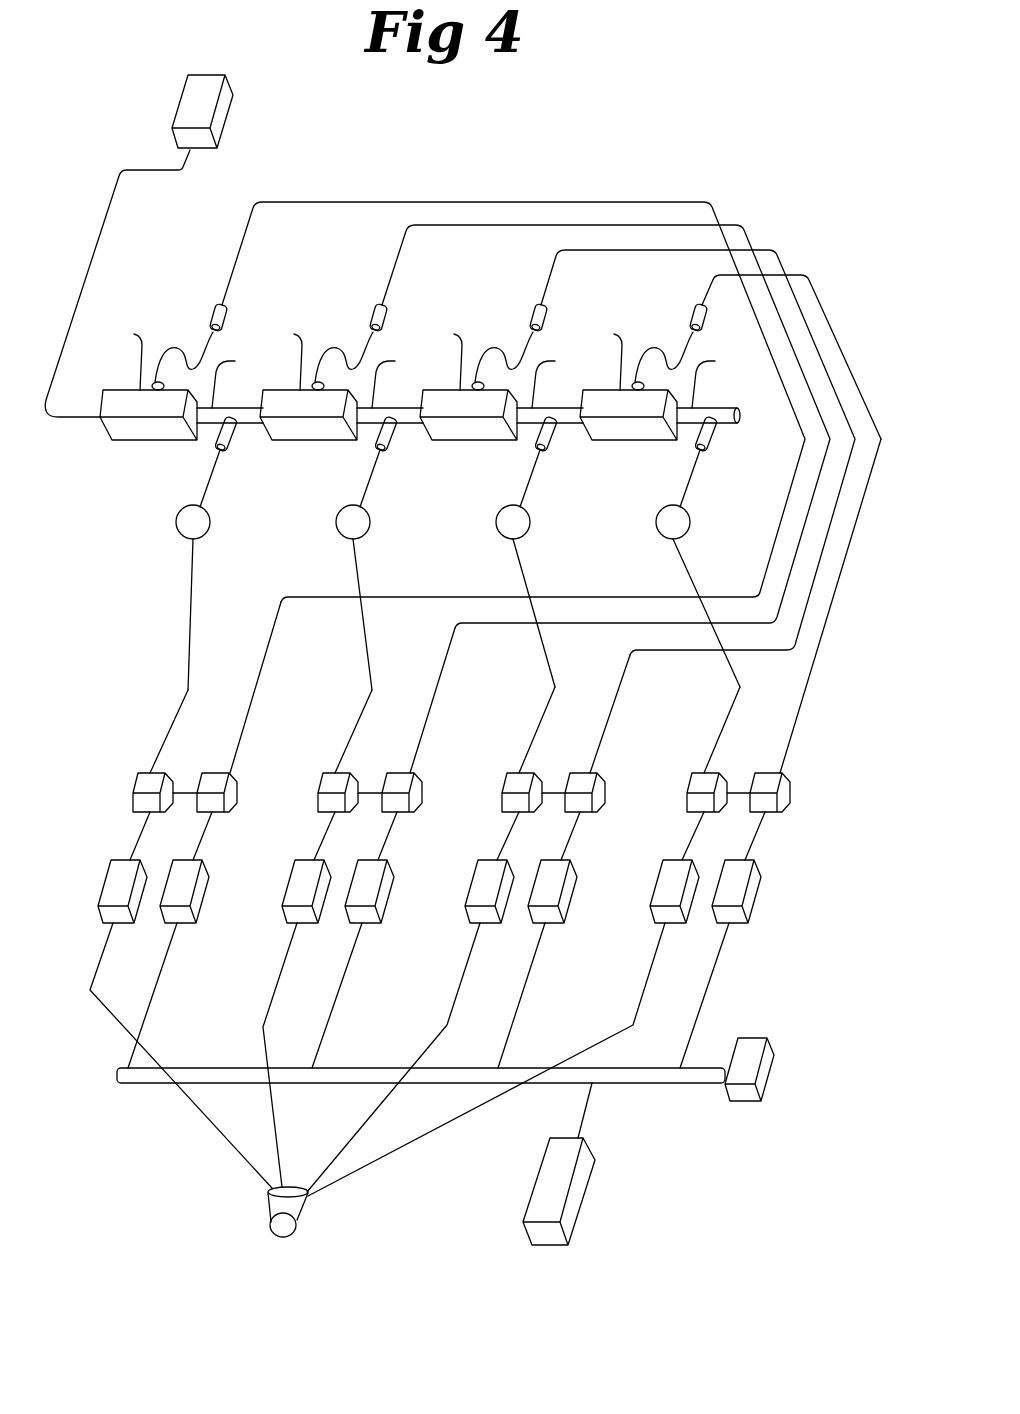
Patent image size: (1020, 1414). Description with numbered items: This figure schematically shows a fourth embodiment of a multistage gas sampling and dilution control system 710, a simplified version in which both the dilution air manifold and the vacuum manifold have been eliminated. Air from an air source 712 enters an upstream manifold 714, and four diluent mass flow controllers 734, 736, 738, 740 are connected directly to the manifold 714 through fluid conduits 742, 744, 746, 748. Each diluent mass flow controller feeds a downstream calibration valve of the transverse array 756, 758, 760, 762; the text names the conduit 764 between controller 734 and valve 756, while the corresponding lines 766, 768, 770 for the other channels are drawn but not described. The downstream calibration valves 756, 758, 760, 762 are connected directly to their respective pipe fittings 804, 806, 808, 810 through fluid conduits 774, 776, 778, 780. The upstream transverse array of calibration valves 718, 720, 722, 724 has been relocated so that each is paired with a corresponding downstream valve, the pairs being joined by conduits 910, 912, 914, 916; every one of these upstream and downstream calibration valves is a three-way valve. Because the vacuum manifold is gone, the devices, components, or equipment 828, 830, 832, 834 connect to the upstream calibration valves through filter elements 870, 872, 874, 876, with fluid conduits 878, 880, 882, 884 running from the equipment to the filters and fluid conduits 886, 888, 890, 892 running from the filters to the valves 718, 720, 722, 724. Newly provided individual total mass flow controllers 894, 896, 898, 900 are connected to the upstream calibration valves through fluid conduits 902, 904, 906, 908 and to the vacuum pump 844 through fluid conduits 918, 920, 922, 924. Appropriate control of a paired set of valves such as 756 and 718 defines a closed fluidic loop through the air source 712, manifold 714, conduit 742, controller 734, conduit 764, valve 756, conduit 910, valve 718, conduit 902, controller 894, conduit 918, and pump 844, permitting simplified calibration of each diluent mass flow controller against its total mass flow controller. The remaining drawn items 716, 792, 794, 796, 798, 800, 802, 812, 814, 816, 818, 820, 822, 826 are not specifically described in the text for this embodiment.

The multistage gas sampling and dilution control system 710 is at (742, 168).
The air source 712 is at (572, 1213).
The upstream manifold 714 is at (135, 1080).
The connector wire 716 is at (590, 1112).
The upstream calibration valve 718 is at (147, 784).
The upstream calibration valve 720 is at (332, 784).
The upstream calibration valve 722 is at (517, 784).
The upstream calibration valve 724 is at (702, 784).
The diluent mass flow controller 734 is at (204, 885).
The diluent mass flow controller 736 is at (388, 885).
The diluent mass flow controller 738 is at (572, 885).
The diluent mass flow controller 740 is at (757, 885).
The fluid conduit 742 is at (162, 973).
The fluid conduit 744 is at (347, 973).
The fluid conduit 746 is at (530, 973).
The fluid conduit 748 is at (710, 973).
The downstream calibration valve 756 is at (239, 805).
The downstream calibration valve 758 is at (423, 805).
The downstream calibration valve 760 is at (608, 805).
The downstream calibration valve 762 is at (790, 803).
The conduit 764 is at (209, 830).
The wire 766 is at (392, 830).
The wire 768 is at (577, 830).
The wire 770 is at (762, 832).
The fluid conduit 774 is at (232, 758).
The fluid conduit 776 is at (414, 758).
The fluid conduit 778 is at (600, 758).
The fluid conduit 780 is at (788, 758).
The controller 792 is at (222, 118).
The sensor housing 794 is at (145, 432).
The sensor housing 796 is at (305, 432).
The sensor housing 798 is at (465, 432).
The sensor housing 800 is at (625, 432).
The cable 802 is at (102, 223).
The pipe fitting 804 is at (207, 310).
The pipe fitting 806 is at (367, 310).
The pipe fitting 808 is at (528, 310).
The pipe fitting 810 is at (688, 310).
The lead 812 is at (113, 353).
The lead 814 is at (273, 353).
The lead 816 is at (433, 353).
The lead 818 is at (593, 353).
The wire 820 is at (176, 340).
The wire 822 is at (336, 340).
The wire 826 is at (656, 340).
The device, component, or equipment 828 is at (496, 347).
The device, component, or equipment 830 is at (365, 456).
The device, component, or equipment 832 is at (525, 456).
The device, component, or equipment 834 is at (685, 456).
The vacuum pump 844 is at (281, 1230).
The filter element 870 is at (189, 542).
The filter element 872 is at (350, 542).
The filter element 874 is at (512, 542).
The filter element 876 is at (675, 542).
The fluid conduit 878 is at (176, 518).
The fluid conduit 880 is at (336, 518).
The fluid conduit 882 is at (496, 518).
The fluid conduit 884 is at (656, 518).
The fluid conduit 886 is at (178, 718).
The fluid conduit 888 is at (362, 718).
The fluid conduit 890 is at (545, 718).
The fluid conduit 892 is at (730, 718).
The total mass flow controller 894 is at (116, 883).
The total mass flow controller 896 is at (298, 883).
The total mass flow controller 898 is at (481, 883).
The total mass flow controller 900 is at (666, 883).
The fluid conduit 902 is at (140, 833).
The fluid conduit 904 is at (322, 833).
The fluid conduit 906 is at (507, 833).
The fluid conduit 908 is at (692, 833).
The conduit 910 is at (182, 790).
The conduit 912 is at (370, 790).
The conduit 914 is at (553, 790).
The conduit 916 is at (740, 790).
The fluid conduit 918 is at (97, 953).
The fluid conduit 920 is at (279, 968).
The fluid conduit 922 is at (460, 970).
The fluid conduit 924 is at (645, 970).